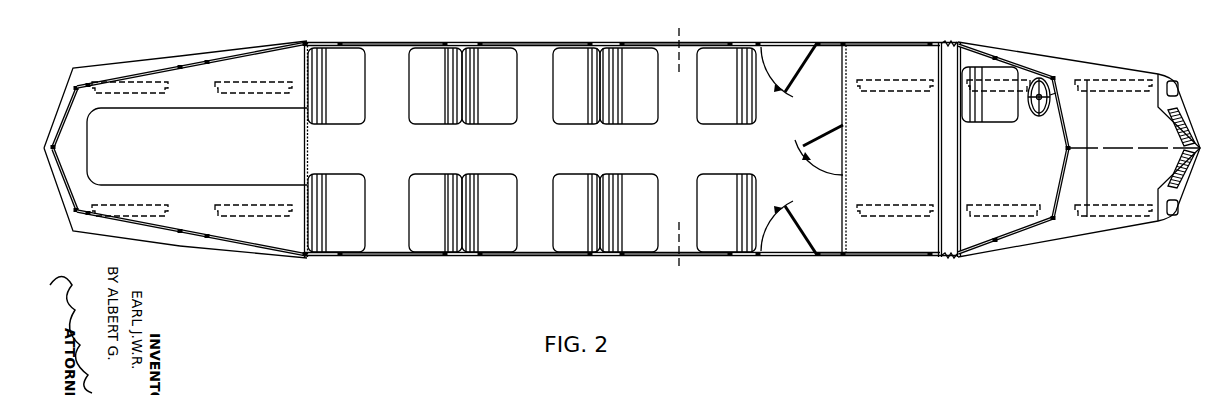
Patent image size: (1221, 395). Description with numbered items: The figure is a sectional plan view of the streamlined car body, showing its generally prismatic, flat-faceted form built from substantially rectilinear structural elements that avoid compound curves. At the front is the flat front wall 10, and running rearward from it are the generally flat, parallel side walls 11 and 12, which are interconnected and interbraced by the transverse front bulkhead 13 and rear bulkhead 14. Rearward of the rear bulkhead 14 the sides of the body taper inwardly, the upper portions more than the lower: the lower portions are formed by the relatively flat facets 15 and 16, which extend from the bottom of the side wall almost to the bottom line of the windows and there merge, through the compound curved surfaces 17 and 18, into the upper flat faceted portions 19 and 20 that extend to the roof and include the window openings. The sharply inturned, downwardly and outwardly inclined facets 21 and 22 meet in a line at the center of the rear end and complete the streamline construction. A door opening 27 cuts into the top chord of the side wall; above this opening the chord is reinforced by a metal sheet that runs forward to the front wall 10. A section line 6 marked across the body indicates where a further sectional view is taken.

The section line 6- 6 is at (678, 153).
The flat front wall 10 is at (944, 47).
The side wall 11 is at (725, 43).
The side wall 12 is at (710, 254).
The front bulkhead 13 is at (846, 68).
The rear bulkhead 14 is at (312, 46).
The flat facet 15 is at (162, 57).
The flat facet 16 is at (170, 244).
The compound curved surface 17 is at (117, 67).
The compound curved surface 18 is at (123, 235).
The upper flat faceted portion 19 is at (225, 50).
The upper flat faceted portion 20 is at (220, 247).
The inclined facet 21 is at (64, 90).
The inclined facet 22 is at (64, 206).
The door opening 27 is at (803, 42).